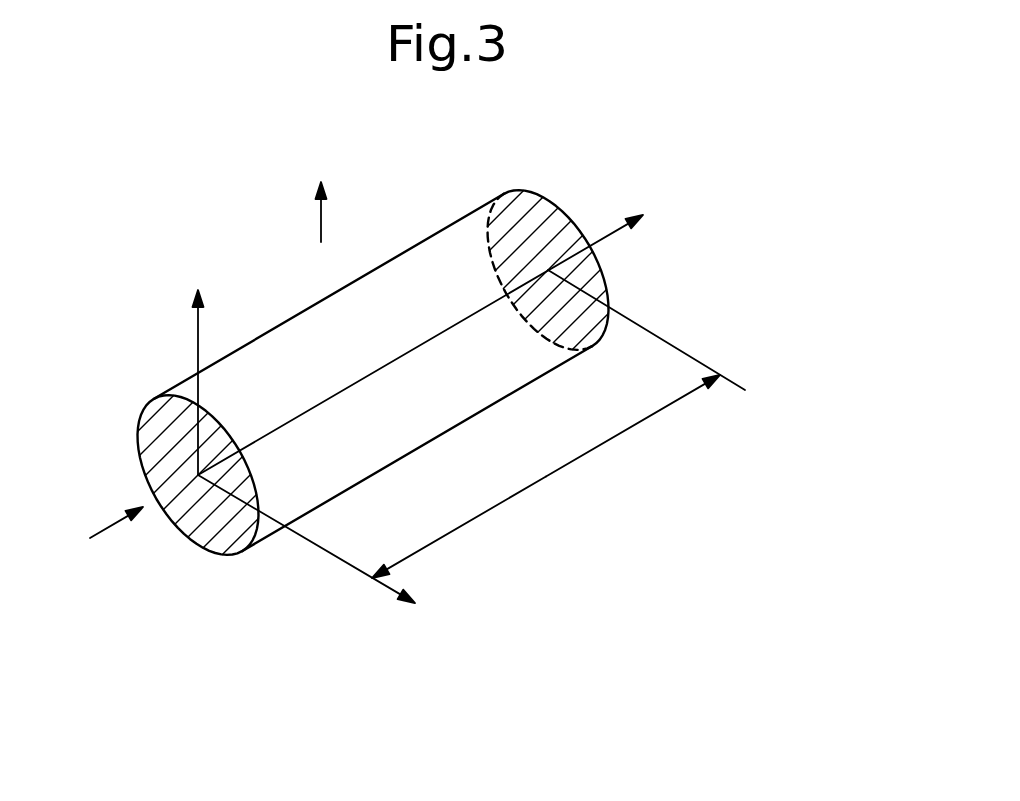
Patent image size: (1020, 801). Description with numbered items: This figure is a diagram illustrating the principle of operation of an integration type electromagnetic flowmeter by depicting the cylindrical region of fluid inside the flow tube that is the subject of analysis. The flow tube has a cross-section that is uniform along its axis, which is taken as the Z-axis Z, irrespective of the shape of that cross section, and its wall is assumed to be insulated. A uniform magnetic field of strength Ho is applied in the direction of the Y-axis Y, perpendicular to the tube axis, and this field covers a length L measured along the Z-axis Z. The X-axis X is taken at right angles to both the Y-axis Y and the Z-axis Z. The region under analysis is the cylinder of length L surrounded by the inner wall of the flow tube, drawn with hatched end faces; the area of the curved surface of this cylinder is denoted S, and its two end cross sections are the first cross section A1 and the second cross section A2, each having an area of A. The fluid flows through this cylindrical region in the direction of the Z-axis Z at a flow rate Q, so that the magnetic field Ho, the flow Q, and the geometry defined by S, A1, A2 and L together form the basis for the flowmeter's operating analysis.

The area of the curved surface of the cylindrical region S is at (292, 327).
The first cross section A1 is at (208, 545).
The second cross section A2 is at (562, 218).
The length of the magnetic field region L is at (558, 424).
The X-axis X is at (318, 549).
The Y-axis Y is at (195, 364).
The Z-axis Z is at (432, 334).
The magnetic field strength Ho is at (319, 197).
The flow rate Q is at (116, 515).